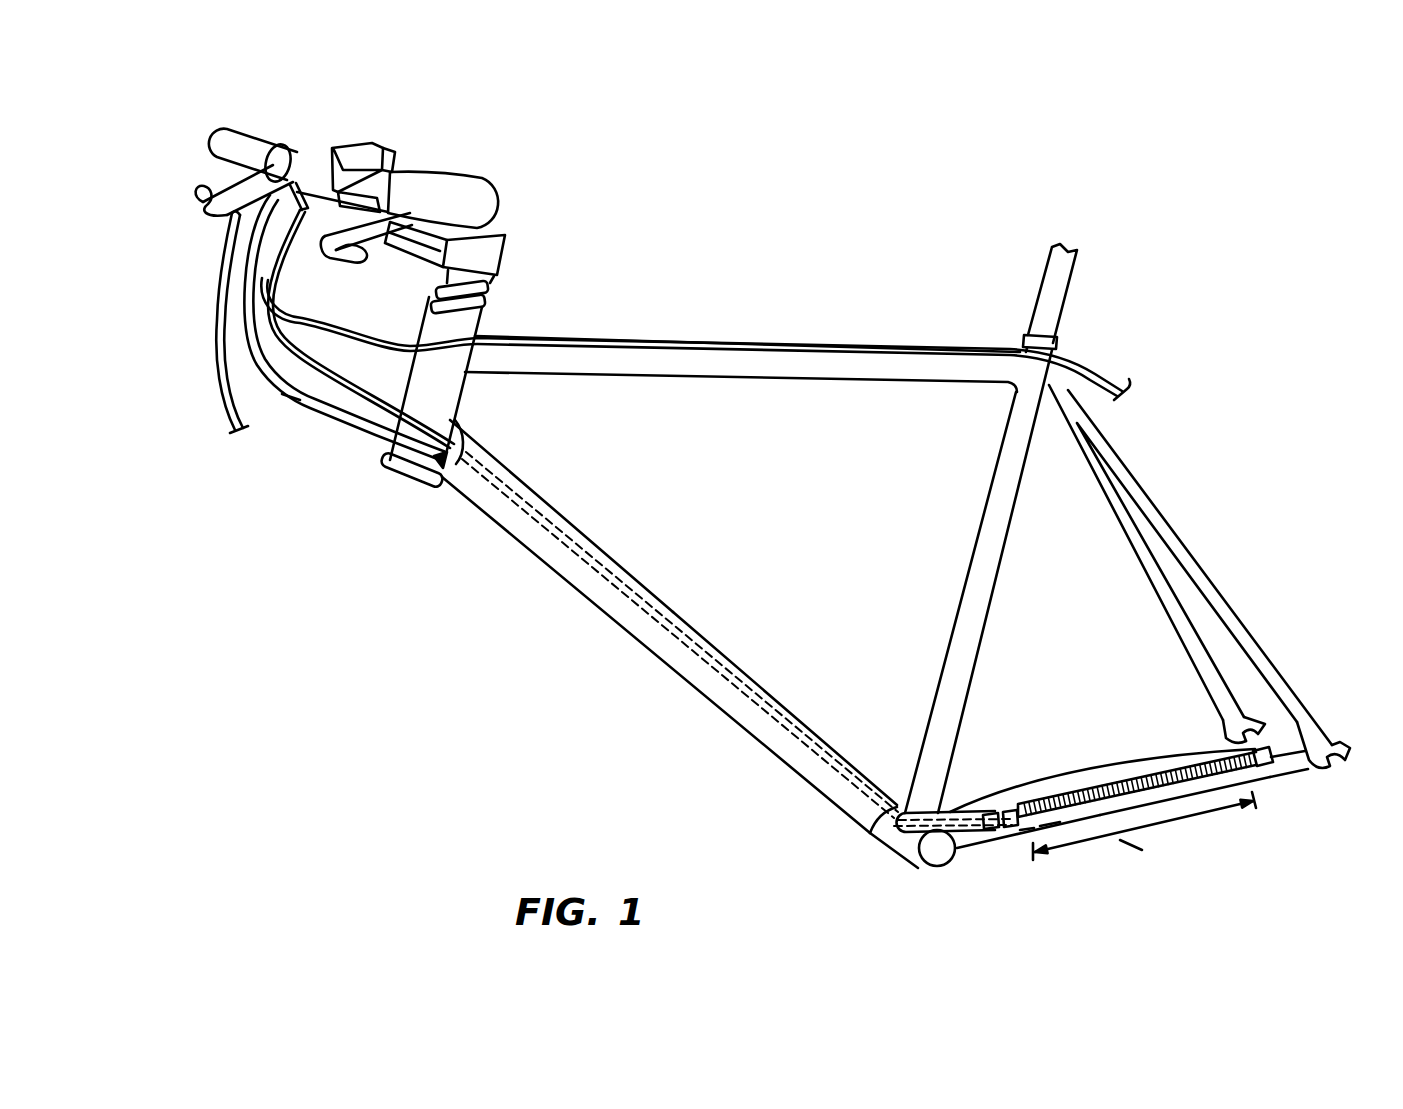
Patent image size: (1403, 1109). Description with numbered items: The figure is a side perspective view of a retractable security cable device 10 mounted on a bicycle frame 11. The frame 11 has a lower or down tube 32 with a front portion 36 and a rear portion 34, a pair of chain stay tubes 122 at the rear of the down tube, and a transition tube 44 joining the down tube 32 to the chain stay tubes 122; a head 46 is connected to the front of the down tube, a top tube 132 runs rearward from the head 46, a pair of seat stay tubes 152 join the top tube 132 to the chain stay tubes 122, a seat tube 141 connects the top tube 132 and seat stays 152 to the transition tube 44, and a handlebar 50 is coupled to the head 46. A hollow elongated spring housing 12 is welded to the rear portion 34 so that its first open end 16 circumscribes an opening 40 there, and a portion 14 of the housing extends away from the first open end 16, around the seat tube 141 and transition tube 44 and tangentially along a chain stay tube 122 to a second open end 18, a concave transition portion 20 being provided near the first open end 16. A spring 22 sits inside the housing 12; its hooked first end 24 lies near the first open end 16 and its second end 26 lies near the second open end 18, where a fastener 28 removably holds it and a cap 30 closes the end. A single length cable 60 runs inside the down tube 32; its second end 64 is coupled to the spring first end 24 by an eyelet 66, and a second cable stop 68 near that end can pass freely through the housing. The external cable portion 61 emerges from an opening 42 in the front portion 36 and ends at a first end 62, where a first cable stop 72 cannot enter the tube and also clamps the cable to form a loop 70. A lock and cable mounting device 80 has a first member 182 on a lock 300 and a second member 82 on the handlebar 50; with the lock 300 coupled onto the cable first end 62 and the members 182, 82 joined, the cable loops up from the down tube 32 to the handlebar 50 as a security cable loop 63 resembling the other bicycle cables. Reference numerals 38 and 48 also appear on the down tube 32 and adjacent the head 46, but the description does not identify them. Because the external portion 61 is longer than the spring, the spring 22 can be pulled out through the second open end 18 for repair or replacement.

The retractable security cable device 10 is at (311, 648).
The frame 11 is at (414, 386).
The hollow elongated spring housing 12 is at (1164, 770).
The portion of spring housing 14 is at (981, 808).
The first open end 16 is at (876, 840).
The second open end 18 is at (1272, 780).
The concave transition portion 20 is at (922, 817).
The spring 22 is at (1102, 783).
The first end of spring 24 is at (1055, 827).
The second end of spring 26 is at (1243, 748).
The fastener 28 is at (1262, 748).
The cap 30 is at (1300, 755).
The first frame member 32 is at (620, 561).
The rear portion of first frame member 34 is at (886, 777).
The front portion of first frame member 36 is at (445, 527).
The down tube wall 38 is at (723, 698).
The opening 40 is at (895, 858).
The opening 42 is at (465, 441).
The transition tube 44 is at (937, 873).
The head 46 is at (461, 328).
The headset 48 is at (489, 290).
The handlebar 50 is at (254, 128).
The single length cable 60 is at (535, 525).
The external cable portion 61 is at (274, 318).
The first end of cable 62 is at (282, 146).
The security cable loop 63 is at (292, 340).
The second end of cable 64 is at (1026, 837).
The eyelet 66 is at (1014, 812).
The second cable stop 68 is at (993, 806).
The loop 70 is at (232, 166).
The first cable stop 72 is at (295, 188).
The lock and cable mounting device 80 is at (377, 127).
The second member 82 is at (277, 203).
The chain stay tube 122 is at (978, 840).
The upper tube 132 is at (763, 367).
The seat tube 141 is at (1005, 467).
The seat stay tubes 152 is at (1222, 597).
The first member 182 is at (392, 161).
The lock 300 is at (333, 150).